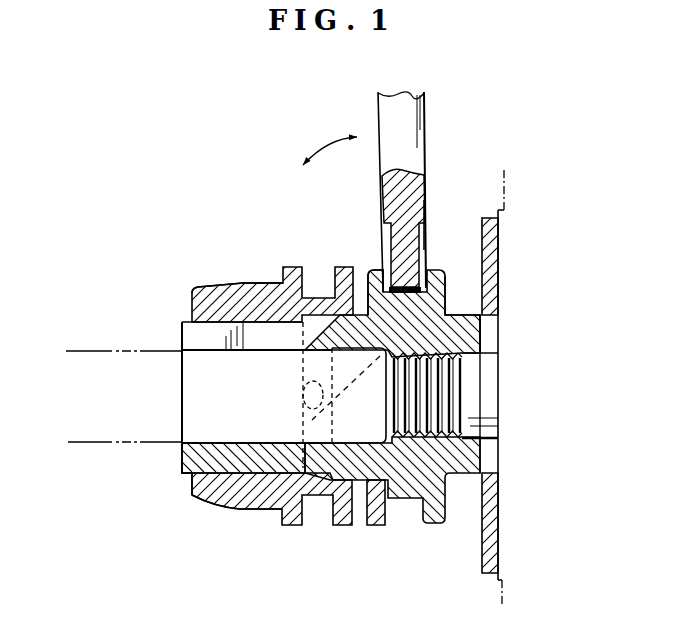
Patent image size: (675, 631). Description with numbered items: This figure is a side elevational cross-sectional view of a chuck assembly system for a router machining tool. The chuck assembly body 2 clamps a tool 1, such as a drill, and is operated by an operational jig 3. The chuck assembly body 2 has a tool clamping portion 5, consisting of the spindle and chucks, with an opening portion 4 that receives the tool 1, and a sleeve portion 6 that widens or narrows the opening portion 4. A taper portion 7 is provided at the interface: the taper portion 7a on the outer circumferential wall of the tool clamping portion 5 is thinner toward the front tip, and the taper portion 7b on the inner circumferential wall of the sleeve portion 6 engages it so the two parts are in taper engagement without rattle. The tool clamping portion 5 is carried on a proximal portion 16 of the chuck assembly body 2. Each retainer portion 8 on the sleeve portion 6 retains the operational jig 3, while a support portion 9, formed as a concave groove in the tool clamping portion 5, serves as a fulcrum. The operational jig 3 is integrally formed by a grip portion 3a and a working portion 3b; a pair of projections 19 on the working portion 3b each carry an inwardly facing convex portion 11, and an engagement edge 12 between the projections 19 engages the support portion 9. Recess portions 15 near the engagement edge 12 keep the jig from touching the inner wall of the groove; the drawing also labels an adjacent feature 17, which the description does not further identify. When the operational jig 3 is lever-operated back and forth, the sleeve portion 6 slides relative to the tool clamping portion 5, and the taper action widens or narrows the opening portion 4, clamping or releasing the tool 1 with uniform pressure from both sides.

The tool 1 is at (93, 351).
The chuck assembly body 2 is at (188, 288).
The operational jig 3 is at (426, 153).
The grip portion 3a is at (432, 116).
The working portion 3b is at (363, 391).
The opening portion 4 is at (180, 351).
The tool clamping portion 5 is at (183, 458).
The sleeve portion 6 is at (268, 508).
The taper portion 7 is at (222, 316).
The taper portion 7a is at (198, 500).
The taper portion 7b is at (245, 300).
The retainer portion 8 is at (305, 403).
The support portion 9 is at (427, 286).
The convex portion 11 is at (305, 384).
The engagement edge 12 is at (428, 293).
The recess portion 15 is at (427, 252).
The proximal portion 16 is at (500, 230).
The projection 17 is at (368, 270).
The projection 19 is at (393, 312).